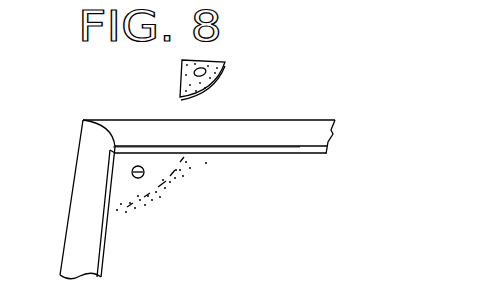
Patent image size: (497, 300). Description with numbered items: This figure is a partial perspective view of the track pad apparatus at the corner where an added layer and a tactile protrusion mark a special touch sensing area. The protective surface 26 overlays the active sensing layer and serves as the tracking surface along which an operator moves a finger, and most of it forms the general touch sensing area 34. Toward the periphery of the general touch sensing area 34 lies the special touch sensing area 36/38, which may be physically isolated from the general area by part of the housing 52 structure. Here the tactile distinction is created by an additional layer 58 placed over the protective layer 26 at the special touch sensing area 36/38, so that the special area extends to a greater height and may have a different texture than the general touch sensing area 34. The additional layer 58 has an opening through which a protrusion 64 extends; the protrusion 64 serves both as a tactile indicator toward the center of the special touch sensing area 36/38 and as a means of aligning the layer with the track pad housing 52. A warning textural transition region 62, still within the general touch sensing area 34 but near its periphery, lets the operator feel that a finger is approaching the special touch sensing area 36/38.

The protective surface 26 is at (276, 210).
The general touch sensing area 34 is at (257, 163).
The special touch sensing area 36 is at (185, 119).
The special touch sensing area 38 is at (127, 158).
The housing 52 is at (85, 156).
The additional layer 58 is at (147, 158).
The warning textural transition region 62 is at (163, 192).
The protrusion 64 is at (135, 177).